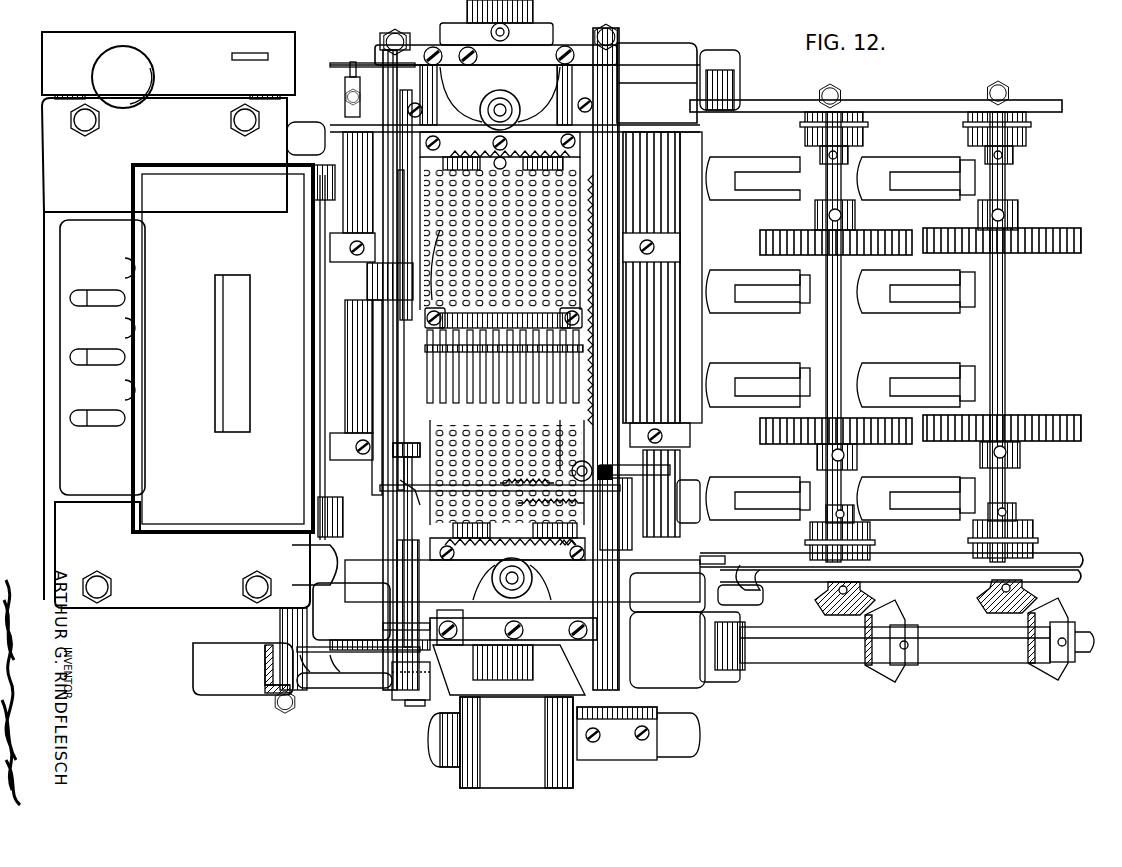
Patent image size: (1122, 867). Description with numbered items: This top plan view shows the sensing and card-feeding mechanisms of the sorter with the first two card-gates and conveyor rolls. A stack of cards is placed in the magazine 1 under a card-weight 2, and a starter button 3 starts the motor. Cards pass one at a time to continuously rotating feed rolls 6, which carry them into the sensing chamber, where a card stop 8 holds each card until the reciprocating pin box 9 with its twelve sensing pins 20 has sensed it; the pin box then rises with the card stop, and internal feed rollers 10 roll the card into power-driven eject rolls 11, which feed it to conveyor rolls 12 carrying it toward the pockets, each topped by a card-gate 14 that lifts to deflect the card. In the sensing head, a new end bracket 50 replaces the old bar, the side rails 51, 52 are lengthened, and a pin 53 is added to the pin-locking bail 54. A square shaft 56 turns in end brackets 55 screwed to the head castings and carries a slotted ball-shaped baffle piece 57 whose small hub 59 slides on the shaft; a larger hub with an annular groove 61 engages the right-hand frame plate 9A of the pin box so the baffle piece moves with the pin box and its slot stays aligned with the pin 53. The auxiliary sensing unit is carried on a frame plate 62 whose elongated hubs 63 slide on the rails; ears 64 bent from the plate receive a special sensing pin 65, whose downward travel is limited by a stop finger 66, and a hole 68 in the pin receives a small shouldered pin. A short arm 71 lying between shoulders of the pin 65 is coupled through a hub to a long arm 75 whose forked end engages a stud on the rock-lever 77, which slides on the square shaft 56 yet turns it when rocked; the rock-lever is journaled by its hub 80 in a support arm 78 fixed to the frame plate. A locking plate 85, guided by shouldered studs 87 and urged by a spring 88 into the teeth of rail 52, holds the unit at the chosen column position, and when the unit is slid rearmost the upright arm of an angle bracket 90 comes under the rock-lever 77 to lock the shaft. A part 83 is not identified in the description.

The magazine 1 is at (52, 196).
The card-weight 2 is at (192, 180).
The starter button 3 is at (168, 70).
The feed rolls 6 is at (332, 258).
The card stop 8 is at (598, 78).
The pin box 9 is at (545, 52).
The right-hand frame plate 9A is at (455, 490).
The internal feed rollers 10 is at (502, 342).
The eject rolls 11 is at (676, 355).
The conveyor rolls 12 is at (783, 238).
The card-gate 14 is at (730, 172).
The sensing pins 20 is at (504, 364).
The end bracket 50 is at (440, 690).
The side rail 51 is at (380, 655).
The side rail 52 is at (640, 640).
The pin 53 is at (430, 265).
The pin-locking bail 54 is at (445, 260).
The end brackets 55 is at (414, 50).
The square shaft 56 is at (385, 580).
The baffle piece 57 is at (385, 322).
The small hub 59 is at (404, 300).
The annular groove 61 is at (368, 272).
The frame plate 62 is at (400, 440).
The elongated hub 63 is at (335, 580).
The ears 64 is at (670, 481).
The special sensing pin 65 is at (575, 460).
The stop finger 66 is at (610, 470).
The hole 68 is at (311, 427).
The short arm 71 is at (556, 460).
The long arm 75 is at (475, 485).
The rock-lever 77 is at (380, 487).
The support arm 78 is at (402, 488).
The hub 80 is at (398, 290).
The block 83 is at (615, 528).
The locking plate 85 is at (620, 490).
The shouldered studs 87 is at (590, 480).
The spring 88 is at (553, 548).
The angle bracket 90 is at (455, 616).